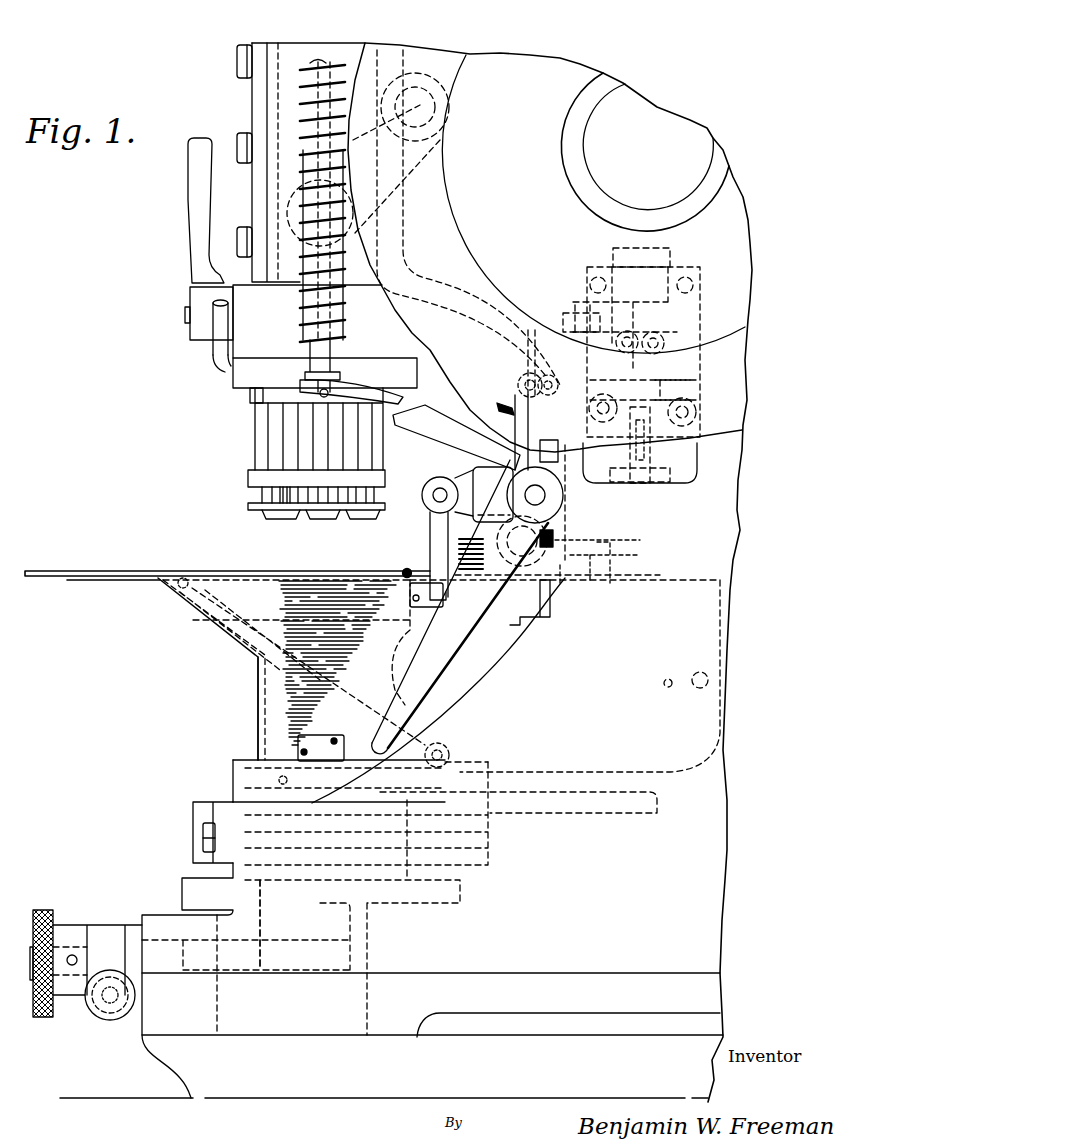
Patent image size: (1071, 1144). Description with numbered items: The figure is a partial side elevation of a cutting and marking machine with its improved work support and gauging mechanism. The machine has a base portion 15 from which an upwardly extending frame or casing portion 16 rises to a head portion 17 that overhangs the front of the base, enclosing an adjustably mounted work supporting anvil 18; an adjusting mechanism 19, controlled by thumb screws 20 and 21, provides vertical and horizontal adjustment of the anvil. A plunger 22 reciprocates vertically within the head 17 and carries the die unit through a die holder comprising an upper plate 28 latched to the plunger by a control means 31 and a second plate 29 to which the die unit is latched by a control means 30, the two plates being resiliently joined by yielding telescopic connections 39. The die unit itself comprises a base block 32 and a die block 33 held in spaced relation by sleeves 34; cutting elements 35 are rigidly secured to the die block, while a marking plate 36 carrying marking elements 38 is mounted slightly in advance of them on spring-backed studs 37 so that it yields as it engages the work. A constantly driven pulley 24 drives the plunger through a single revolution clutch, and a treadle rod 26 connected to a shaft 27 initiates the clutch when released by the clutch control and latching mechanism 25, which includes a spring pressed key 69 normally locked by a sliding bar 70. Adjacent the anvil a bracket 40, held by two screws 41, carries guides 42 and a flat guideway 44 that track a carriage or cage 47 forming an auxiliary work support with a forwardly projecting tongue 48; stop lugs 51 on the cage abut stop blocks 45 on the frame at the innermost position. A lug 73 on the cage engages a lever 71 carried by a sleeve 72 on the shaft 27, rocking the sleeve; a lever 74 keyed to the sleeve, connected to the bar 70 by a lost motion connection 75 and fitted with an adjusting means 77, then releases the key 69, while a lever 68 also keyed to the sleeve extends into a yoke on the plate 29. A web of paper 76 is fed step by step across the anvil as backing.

The base portion 15 is at (262, 1090).
The frame or casing portion 16 is at (690, 895).
The head portion 17 is at (290, 45).
The work supporting anvil 18 is at (255, 694).
The adjusting mechanism 19 is at (258, 965).
The thumb screw 20 is at (85, 975).
The thumb screw 21 is at (98, 1020).
The plunger 22 is at (250, 325).
The pulley 24 is at (535, 58).
The clutch control and latching mechanism 25 is at (672, 270).
The treadle rod 26 is at (316, 386).
The shaft 27 is at (538, 522).
The upper plate 28 is at (268, 352).
The second plate 29 is at (245, 362).
The control means 30 is at (215, 333).
The control means 31 is at (200, 238).
The base block 32 is at (260, 395).
The die block 33 is at (255, 485).
The sleeves 34 is at (260, 463).
The cutting elements 35 is at (283, 500).
The marking plate 36 is at (250, 508).
The studs 37 is at (255, 498).
The marking elements 38 is at (330, 515).
The yielding telescopic connections 39 is at (300, 130).
The bracket 40 is at (200, 820).
The screws 41 is at (203, 848).
The guides 42 is at (235, 778).
The flat slide or guideway 44 is at (490, 822).
The stop blocks 45 is at (550, 605).
The carriage or cage 47 is at (255, 733).
The tongue or support 48 is at (125, 578).
The stop lugs 51 is at (408, 606).
The lever 68 is at (420, 420).
The spring pressed key 69 is at (690, 423).
The sliding bar 70 is at (680, 388).
The lever 71 is at (433, 670).
The sleeve 72 is at (556, 498).
The lug 73 is at (320, 722).
The lever 74 is at (520, 432).
The lost motion connection 75 is at (540, 372).
The web of paper 76 is at (718, 580).
The adjusting means 77 is at (512, 392).